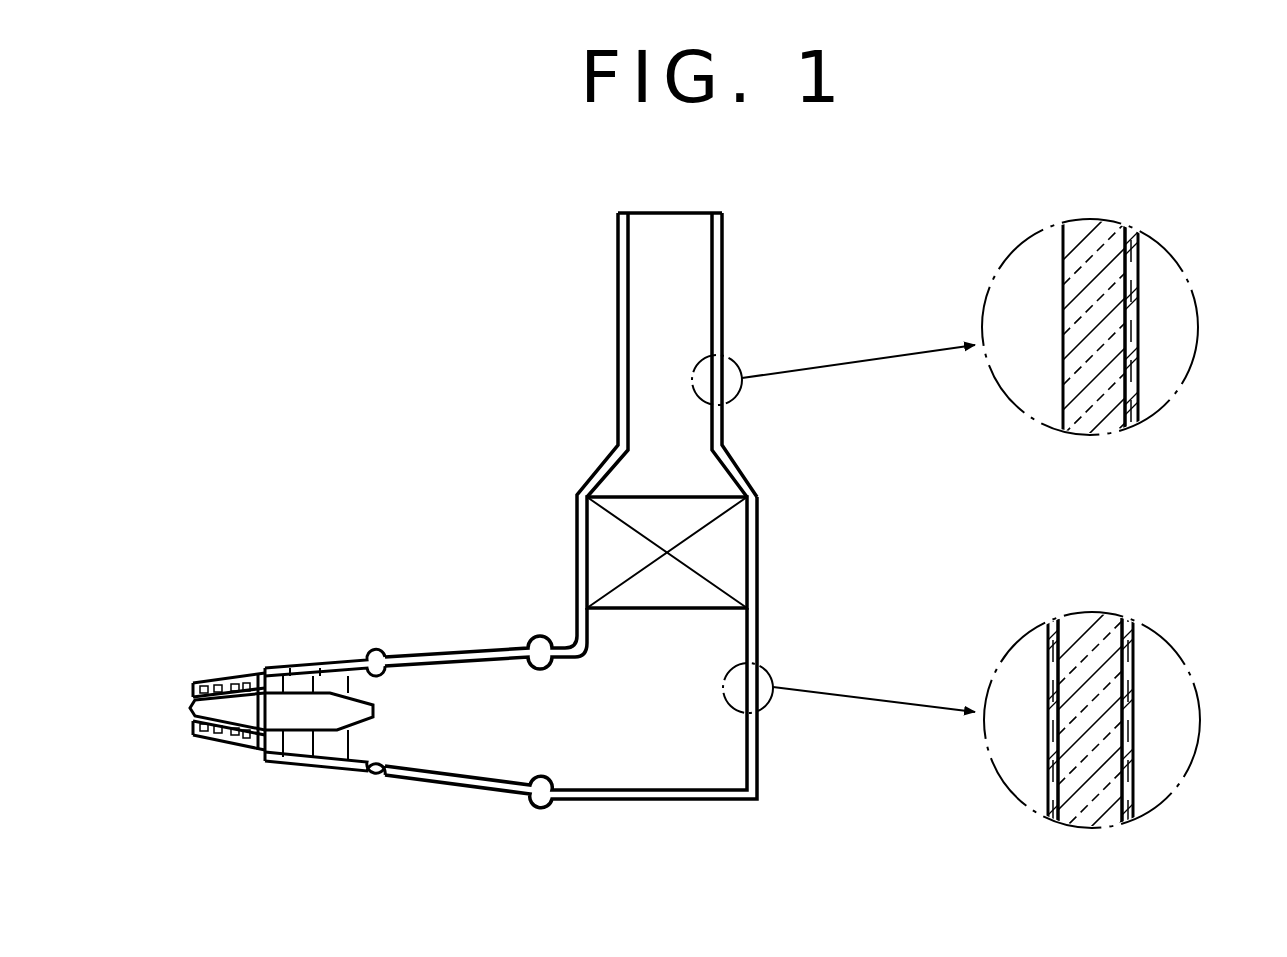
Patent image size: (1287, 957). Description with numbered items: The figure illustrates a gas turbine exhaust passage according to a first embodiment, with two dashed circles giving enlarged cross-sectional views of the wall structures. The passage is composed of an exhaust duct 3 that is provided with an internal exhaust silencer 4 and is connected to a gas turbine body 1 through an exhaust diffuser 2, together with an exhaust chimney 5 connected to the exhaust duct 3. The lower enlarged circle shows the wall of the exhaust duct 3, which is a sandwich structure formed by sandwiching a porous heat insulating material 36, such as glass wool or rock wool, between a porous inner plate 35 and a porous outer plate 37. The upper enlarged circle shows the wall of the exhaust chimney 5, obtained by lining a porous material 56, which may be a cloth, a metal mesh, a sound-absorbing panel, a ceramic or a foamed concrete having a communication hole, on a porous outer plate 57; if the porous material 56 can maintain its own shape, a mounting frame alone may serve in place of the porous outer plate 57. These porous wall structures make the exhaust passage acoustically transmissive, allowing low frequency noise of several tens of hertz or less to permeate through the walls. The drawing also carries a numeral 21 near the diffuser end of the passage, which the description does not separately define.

The gas turbine body 1 is at (258, 605).
The exhaust diffuser 2 is at (383, 605).
The exhaust duct 3 is at (570, 497).
The exhaust silencer 4 is at (722, 552).
The exhaust chimney 5 is at (610, 213).
The core member 21 is at (292, 742).
The porous inner plate 35 is at (1048, 680).
The porous heat insulating material 36 is at (1108, 628).
The porous outer plate 37 is at (1135, 760).
The porous material 56 is at (1080, 278).
The porous outer plate 57 is at (1138, 305).